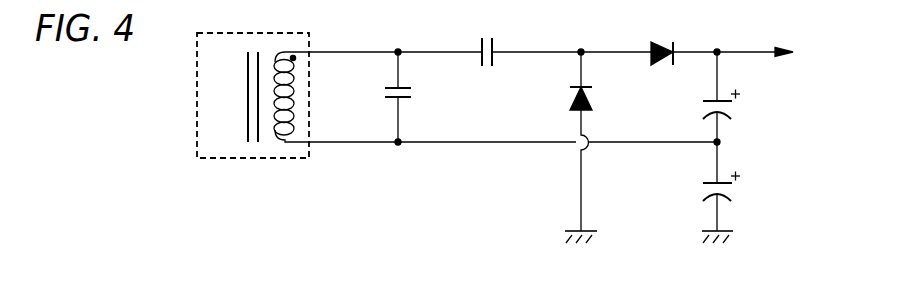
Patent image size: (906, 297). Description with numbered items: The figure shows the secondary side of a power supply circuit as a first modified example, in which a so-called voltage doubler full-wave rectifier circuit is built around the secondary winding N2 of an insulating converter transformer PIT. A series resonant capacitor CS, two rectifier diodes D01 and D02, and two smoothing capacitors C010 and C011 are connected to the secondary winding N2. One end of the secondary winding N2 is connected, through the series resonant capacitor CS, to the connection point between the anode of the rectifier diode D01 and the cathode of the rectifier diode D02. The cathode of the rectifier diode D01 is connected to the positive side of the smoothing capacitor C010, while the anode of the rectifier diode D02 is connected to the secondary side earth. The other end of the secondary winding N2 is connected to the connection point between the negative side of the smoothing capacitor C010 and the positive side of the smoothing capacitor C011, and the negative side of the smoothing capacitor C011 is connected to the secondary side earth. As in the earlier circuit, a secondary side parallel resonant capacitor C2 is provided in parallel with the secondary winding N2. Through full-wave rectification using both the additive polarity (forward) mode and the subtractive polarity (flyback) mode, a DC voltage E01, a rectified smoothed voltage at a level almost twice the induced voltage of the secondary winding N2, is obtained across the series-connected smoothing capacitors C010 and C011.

The insulating converter transformer PIT is at (253, 84).
The secondary winding N2 is at (297, 88).
The secondary side parallel resonant capacitor C2 is at (407, 97).
The series resonant capacitor CS is at (489, 40).
The rectifier diode D02 is at (601, 146).
The rectifier diode D01 is at (649, 41).
The DC voltage E01 is at (774, 53).
The smoothing capacitor C010 is at (747, 98).
The smoothing capacitor C011 is at (747, 192).